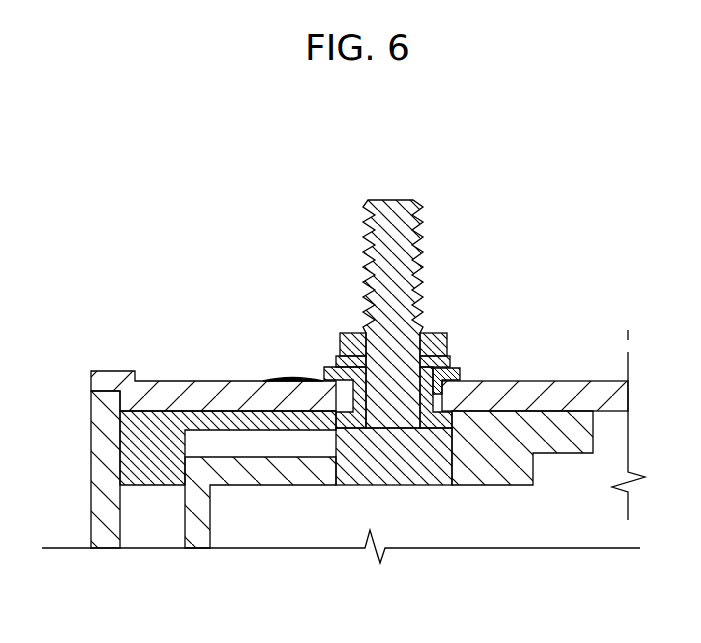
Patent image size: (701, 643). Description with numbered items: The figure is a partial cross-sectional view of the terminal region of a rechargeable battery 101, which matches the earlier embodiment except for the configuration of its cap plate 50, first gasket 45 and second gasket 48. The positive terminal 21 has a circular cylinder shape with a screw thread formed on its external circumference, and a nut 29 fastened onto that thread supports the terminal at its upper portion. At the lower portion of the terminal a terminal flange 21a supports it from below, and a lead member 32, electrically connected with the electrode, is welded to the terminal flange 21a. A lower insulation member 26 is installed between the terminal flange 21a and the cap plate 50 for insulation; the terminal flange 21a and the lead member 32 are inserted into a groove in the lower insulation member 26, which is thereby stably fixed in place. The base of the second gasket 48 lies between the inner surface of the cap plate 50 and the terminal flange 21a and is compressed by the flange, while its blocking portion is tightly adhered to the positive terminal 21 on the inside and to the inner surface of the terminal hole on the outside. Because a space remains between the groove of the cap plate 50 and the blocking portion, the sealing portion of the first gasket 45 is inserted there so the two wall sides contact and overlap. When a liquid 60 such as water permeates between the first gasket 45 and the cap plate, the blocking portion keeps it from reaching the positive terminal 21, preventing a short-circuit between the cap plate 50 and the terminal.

The rechargeable battery 101 is at (285, 212).
The positive terminal 21 is at (421, 236).
The terminal flange 21a is at (350, 445).
The nut 29 is at (440, 333).
The first gasket 45 is at (460, 374).
The second gasket 48 is at (336, 408).
The cap plate 50 is at (564, 393).
The liquid 60 is at (276, 378).
The lower insulation member 26 is at (138, 453).
The lead member 32 is at (258, 470).